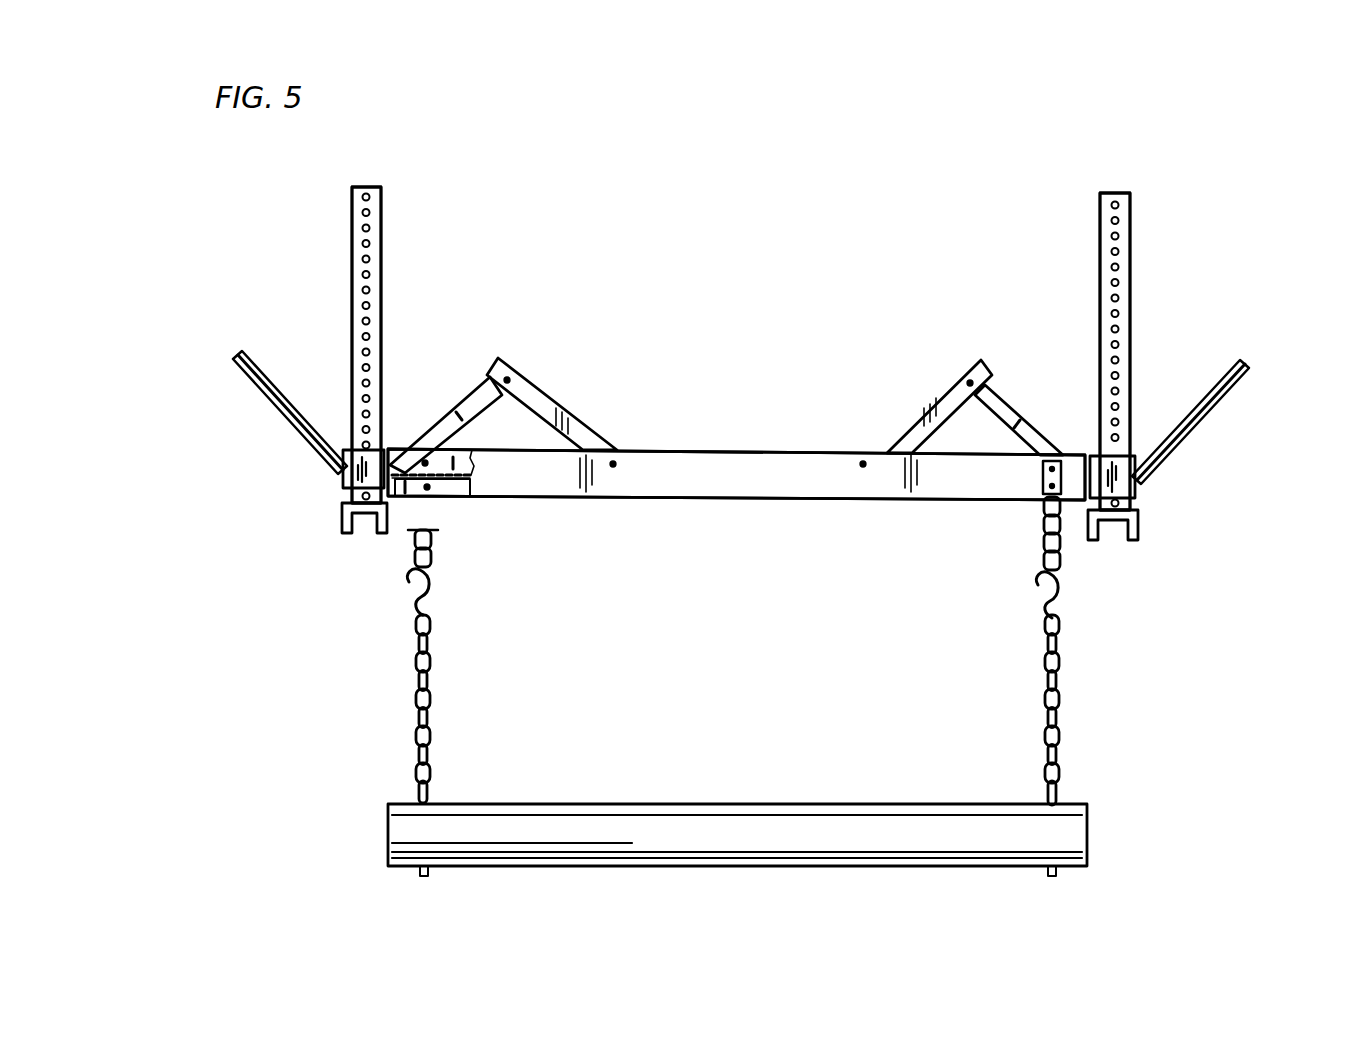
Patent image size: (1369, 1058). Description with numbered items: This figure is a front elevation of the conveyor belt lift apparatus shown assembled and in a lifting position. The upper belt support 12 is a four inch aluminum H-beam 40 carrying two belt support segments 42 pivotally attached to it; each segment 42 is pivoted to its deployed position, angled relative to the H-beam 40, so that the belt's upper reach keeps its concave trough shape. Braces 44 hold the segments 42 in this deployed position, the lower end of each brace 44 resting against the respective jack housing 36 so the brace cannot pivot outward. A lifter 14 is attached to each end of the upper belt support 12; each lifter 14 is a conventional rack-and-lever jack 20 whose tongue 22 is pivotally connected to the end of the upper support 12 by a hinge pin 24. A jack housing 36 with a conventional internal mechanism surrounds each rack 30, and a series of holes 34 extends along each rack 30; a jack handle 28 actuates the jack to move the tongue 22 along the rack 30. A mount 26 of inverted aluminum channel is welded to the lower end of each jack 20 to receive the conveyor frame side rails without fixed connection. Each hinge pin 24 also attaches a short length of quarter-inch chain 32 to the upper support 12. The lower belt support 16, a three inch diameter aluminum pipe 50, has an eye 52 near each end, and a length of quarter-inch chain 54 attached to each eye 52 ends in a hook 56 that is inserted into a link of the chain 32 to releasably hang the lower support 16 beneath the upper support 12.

The upper belt support 12 is at (603, 504).
The lifter 14 is at (352, 245).
The lower belt support 16 is at (710, 870).
The rack-and-lever jack 20 is at (340, 486).
The tongue 22 is at (420, 499).
The hinge pin 24 is at (440, 492).
The mount 26 is at (343, 518).
The jack handle 28 is at (245, 377).
The rack 30 is at (382, 305).
The chain 32 is at (437, 553).
The holes 34 is at (367, 259).
The jack housing 36 is at (343, 478).
The H-beam 40 is at (720, 505).
The belt support segment 42 is at (553, 402).
The brace 44 is at (460, 410).
The aluminum pipe 50 is at (905, 870).
The eye 52 is at (440, 800).
The chain 54 is at (437, 686).
The hook 56 is at (440, 590).